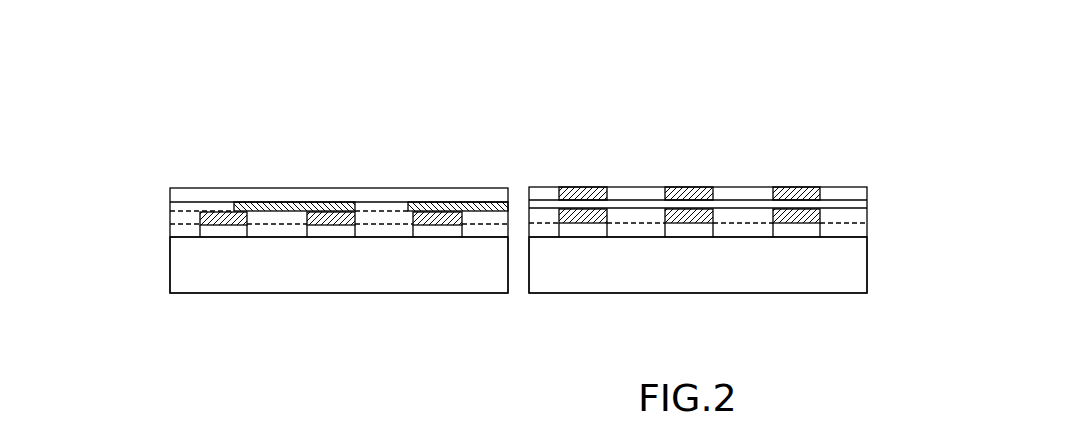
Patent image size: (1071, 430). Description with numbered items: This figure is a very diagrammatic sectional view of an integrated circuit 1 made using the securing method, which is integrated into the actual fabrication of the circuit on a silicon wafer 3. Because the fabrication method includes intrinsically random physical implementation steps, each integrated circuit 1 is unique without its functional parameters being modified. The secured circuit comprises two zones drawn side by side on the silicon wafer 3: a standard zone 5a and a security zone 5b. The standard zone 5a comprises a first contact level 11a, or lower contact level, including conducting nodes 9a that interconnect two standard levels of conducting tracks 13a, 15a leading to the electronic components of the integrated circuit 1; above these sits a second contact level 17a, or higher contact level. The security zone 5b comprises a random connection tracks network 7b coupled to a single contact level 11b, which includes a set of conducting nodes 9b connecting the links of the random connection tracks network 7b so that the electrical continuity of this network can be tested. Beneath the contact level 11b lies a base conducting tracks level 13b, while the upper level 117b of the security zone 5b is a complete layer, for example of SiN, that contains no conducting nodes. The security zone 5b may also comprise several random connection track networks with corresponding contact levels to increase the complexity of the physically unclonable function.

The integrated circuit 1 is at (516, 234).
The silicon wafer 3 is at (325, 279).
The standard zone 5a is at (745, 180).
The security zone 5b is at (290, 180).
The random connection tracks network 7b is at (348, 197).
The conducting nodes 9a is at (820, 215).
The conducting nodes 9b is at (200, 216).
The first contact level 11a is at (870, 215).
The contact level 11b is at (166, 217).
The standard level of conducting tracks 13a is at (870, 229).
The base conducting tracks level 13b is at (166, 236).
The standard level of conducting tracks 15a is at (870, 203).
The second contact level 17a is at (870, 192).
The upper level 117b is at (166, 190).